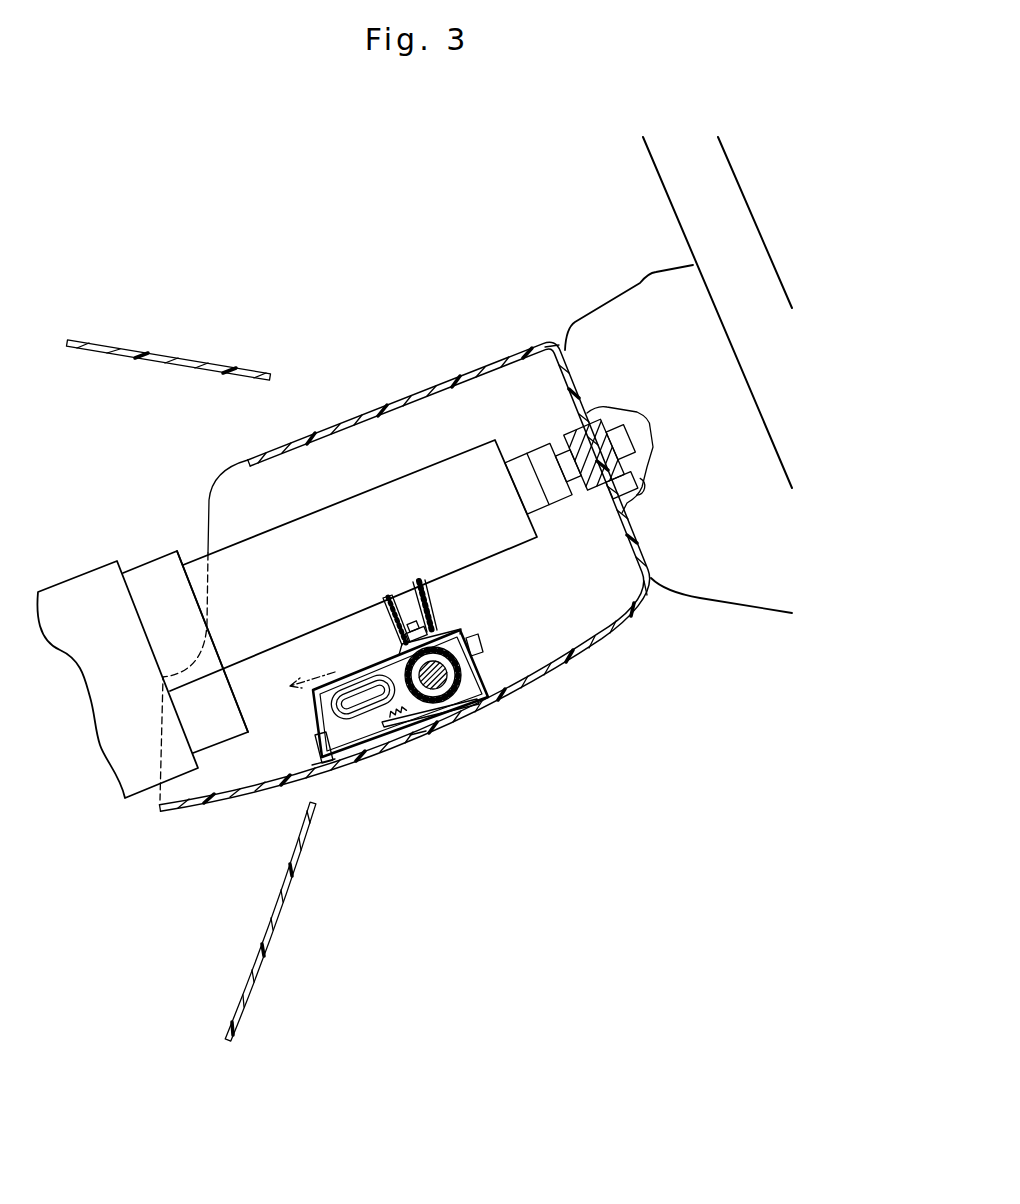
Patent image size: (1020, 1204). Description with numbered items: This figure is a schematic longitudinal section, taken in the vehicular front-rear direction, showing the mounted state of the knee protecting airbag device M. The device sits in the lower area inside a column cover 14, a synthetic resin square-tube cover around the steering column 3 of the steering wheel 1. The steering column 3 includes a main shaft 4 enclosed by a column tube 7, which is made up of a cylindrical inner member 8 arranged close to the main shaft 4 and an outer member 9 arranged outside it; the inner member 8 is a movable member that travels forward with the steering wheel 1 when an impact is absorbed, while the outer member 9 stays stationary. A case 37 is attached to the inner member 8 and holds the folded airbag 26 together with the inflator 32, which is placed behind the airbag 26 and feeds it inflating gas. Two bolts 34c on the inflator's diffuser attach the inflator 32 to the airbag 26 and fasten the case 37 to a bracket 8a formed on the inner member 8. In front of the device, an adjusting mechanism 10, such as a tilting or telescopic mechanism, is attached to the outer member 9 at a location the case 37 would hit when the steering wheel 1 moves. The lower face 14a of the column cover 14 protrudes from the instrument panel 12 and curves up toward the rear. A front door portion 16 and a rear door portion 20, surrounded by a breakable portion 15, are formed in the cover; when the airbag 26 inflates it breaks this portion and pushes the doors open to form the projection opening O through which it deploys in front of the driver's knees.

The steering wheel 1 is at (635, 303).
The steering column 3 is at (416, 452).
The main shaft 4 is at (555, 503).
The column tube 7 is at (217, 437).
The inner member 8 is at (247, 560).
The bracket 8a is at (425, 633).
The outer member 9 is at (142, 570).
The adjusting mechanism 10 is at (140, 790).
The instrument panel 12 is at (282, 969).
The column cover 14 is at (482, 351).
The lower face 14a is at (600, 640).
The breakable portion 15 is at (418, 737).
The front door portion 16 is at (375, 763).
The rear door portion 20 is at (462, 722).
The airbag 26 is at (350, 750).
The inflator 32 is at (428, 653).
The bolt 34c is at (402, 632).
The case 37 is at (368, 649).
The knee protecting airbag device M is at (507, 650).
The projection opening O is at (418, 735).